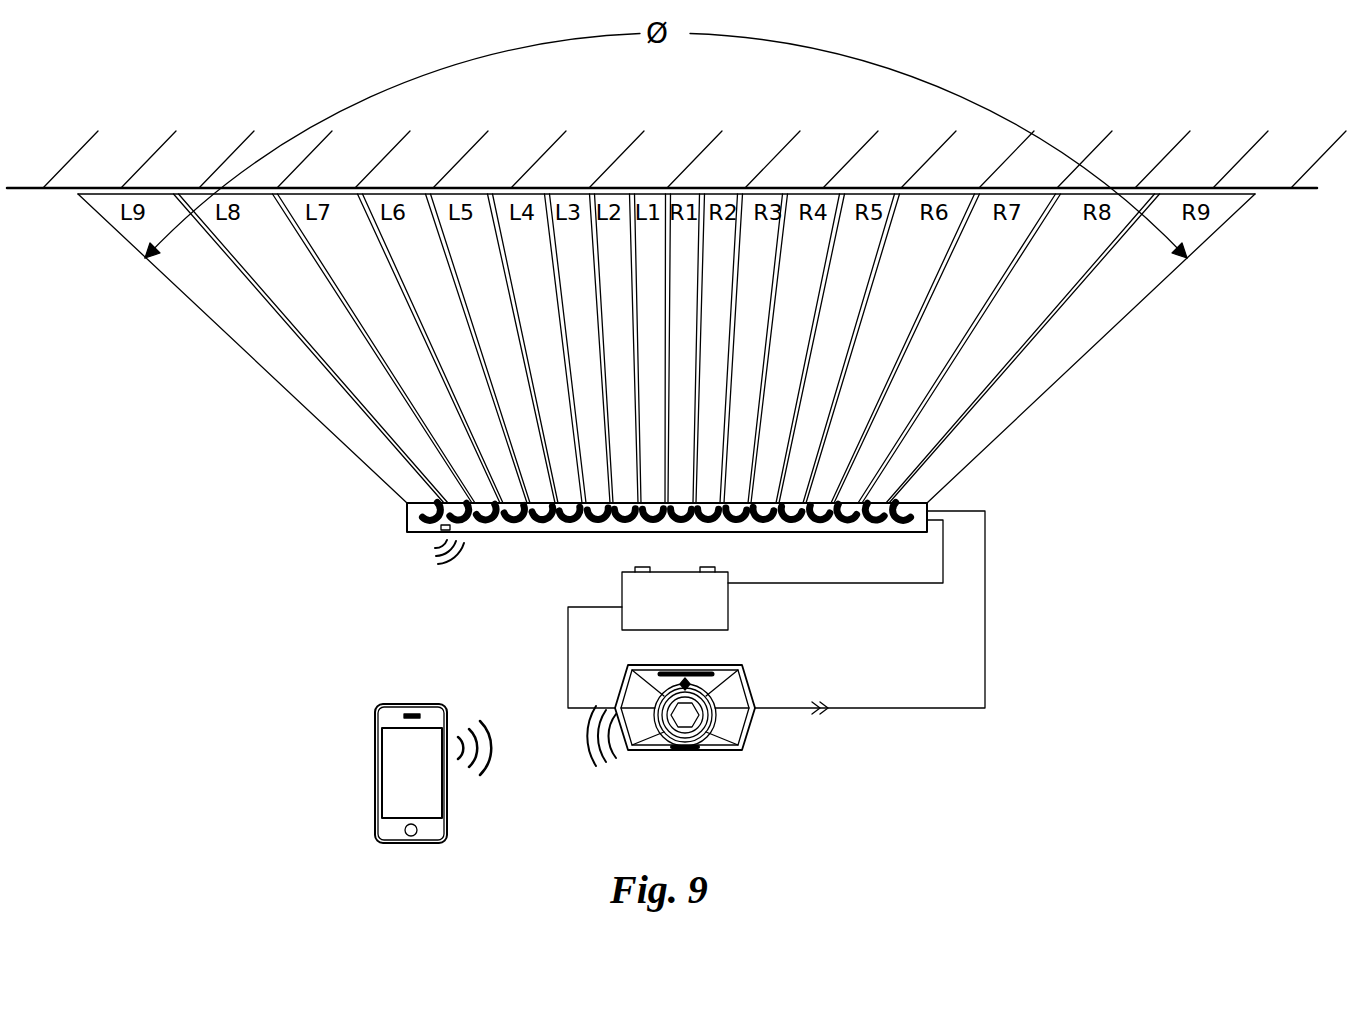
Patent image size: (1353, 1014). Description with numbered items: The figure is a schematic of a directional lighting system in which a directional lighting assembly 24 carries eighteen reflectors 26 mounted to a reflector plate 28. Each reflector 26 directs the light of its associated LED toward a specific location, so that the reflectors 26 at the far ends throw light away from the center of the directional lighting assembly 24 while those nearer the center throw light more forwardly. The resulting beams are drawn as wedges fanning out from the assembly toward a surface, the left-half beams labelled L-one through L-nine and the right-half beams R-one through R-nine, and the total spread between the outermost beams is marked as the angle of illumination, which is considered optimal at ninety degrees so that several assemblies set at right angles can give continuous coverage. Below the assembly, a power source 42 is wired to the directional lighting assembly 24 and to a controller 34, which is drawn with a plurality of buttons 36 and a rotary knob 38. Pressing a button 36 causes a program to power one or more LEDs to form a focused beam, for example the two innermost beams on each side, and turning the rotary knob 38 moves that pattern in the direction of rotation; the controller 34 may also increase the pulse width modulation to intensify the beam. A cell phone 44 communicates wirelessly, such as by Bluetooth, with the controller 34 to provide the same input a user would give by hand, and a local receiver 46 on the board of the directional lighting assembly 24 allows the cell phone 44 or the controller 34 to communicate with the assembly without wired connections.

The directional lighting assembly 24 is at (393, 523).
The reflector 26 is at (497, 528).
The reflector plate 28 is at (564, 531).
The controller 34 is at (752, 763).
The button 36 is at (647, 687).
The rotary knob 38 is at (687, 723).
The power source 42 is at (718, 617).
The cell phone 44 is at (367, 740).
The local receiver 46 is at (440, 528).